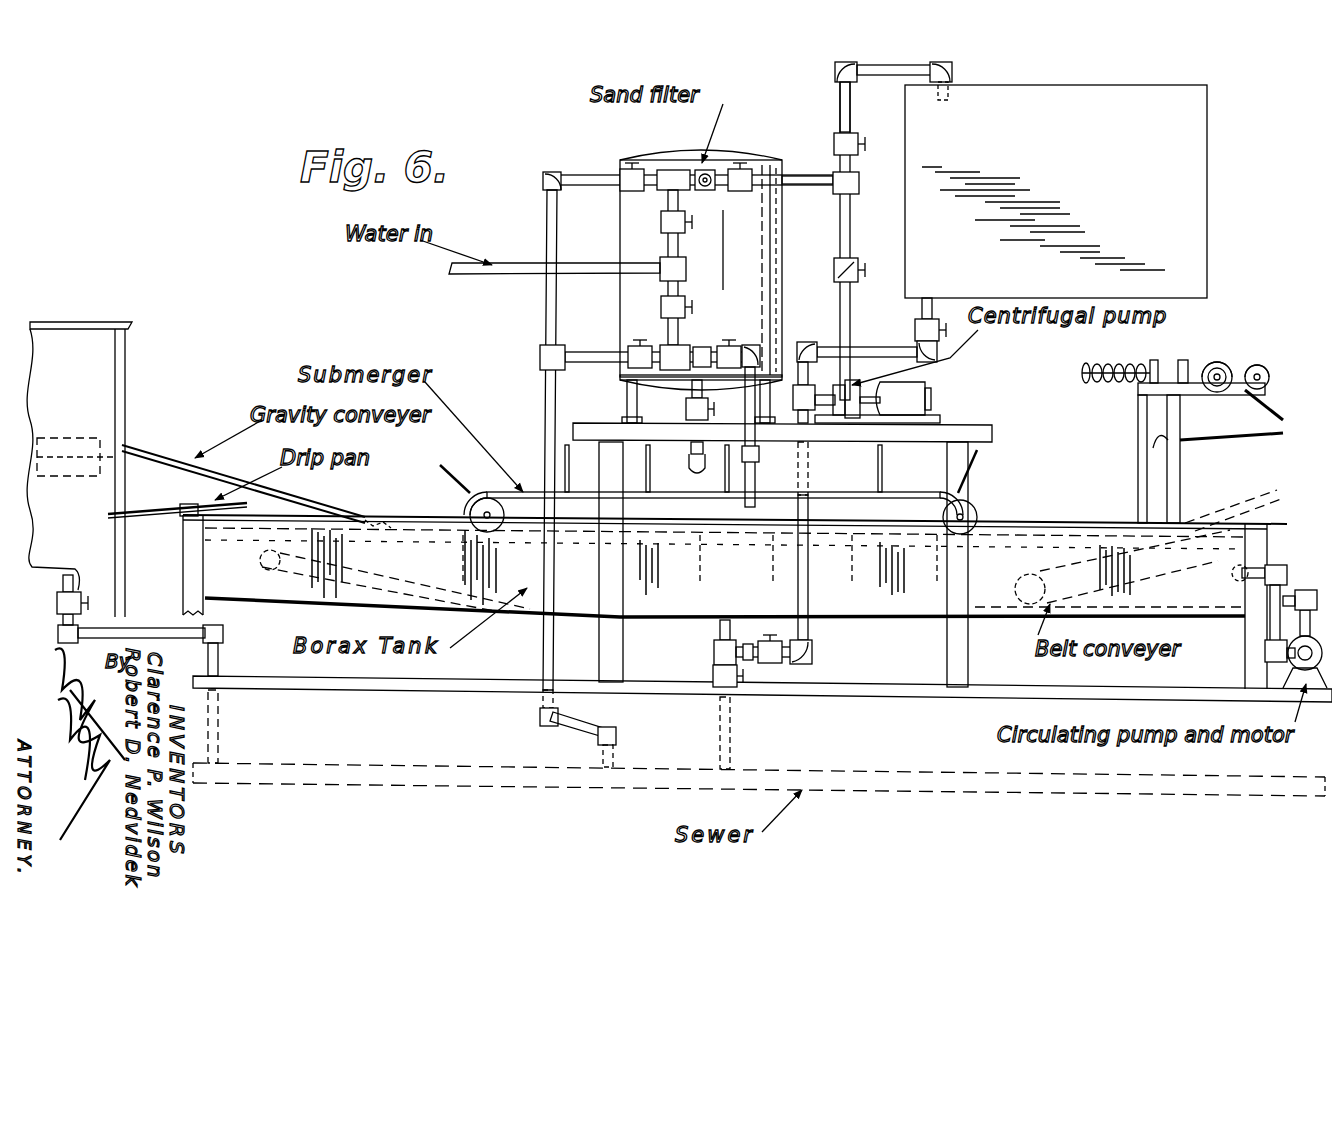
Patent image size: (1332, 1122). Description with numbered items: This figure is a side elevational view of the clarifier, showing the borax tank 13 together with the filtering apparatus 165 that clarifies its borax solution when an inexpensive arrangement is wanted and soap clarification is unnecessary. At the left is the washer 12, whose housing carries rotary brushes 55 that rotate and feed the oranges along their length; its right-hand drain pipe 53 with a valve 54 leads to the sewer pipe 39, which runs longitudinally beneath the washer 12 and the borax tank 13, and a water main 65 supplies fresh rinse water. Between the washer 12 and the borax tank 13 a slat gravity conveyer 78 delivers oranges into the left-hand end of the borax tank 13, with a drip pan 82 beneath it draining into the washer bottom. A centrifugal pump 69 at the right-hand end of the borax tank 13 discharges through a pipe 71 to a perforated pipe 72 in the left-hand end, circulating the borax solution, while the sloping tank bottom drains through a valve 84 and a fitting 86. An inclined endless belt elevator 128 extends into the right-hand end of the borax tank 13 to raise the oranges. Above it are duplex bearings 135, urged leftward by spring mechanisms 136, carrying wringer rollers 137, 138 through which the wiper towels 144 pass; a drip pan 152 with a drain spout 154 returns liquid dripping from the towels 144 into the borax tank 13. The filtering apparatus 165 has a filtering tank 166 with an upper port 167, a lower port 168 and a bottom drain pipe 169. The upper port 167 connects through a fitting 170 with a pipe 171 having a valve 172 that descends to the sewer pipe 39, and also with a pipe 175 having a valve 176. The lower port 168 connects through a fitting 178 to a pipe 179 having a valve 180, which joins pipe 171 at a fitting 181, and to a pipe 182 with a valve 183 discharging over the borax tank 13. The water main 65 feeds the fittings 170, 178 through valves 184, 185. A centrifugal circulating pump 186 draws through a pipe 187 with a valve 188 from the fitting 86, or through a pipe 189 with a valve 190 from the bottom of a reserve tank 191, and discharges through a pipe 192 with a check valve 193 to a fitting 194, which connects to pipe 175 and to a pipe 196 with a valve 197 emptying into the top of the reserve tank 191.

The washer 12 is at (95, 345).
The borax tank 13 is at (400, 518).
The sewer pipe 39 is at (560, 778).
The right-hand drain pipe 53 is at (72, 590).
The valve 54 is at (85, 603).
The rotary brushes 55 is at (100, 440).
The water main 65 is at (475, 272).
The centrifugal pump 69 is at (1303, 598).
The pipe 71 is at (407, 583).
The perforated pipe 72 is at (266, 568).
The gravity conveyer 78 is at (165, 455).
The drip pan 82 is at (148, 515).
The valve 84 is at (722, 678).
The fitting 86 is at (716, 650).
The inclined endless belt elevator 128 is at (1215, 505).
The duplex bearings 135 is at (1212, 362).
The spring mechanisms 136 is at (1115, 367).
The wringer roller 137 is at (1270, 372).
The wringer roller 138 is at (1228, 366).
The wiper towels 144 is at (1260, 366).
The drip pan 152 is at (1153, 446).
The drain spout 154 is at (1140, 475).
The filtering apparatus 165 is at (652, 254).
The filtering tank 166 is at (770, 278).
The upper port 167 is at (712, 176).
The lower port 168 is at (700, 355).
The drain pipe 169 is at (686, 409).
The fitting 170 is at (678, 172).
The pipe 171 is at (583, 175).
The valve 172 is at (632, 166).
The pipe 175 is at (805, 183).
The valve 176 is at (752, 177).
The fitting 178 is at (678, 347).
The pipe 179 is at (591, 364).
The valve 180 is at (640, 350).
The fitting 181 is at (540, 358).
The pipe 182 is at (745, 347).
The valve 183 is at (762, 338).
The valve 184 is at (660, 222).
The valve 185 is at (660, 306).
The centrifugal circulating pump 186 is at (858, 396).
The pipe 187 is at (808, 486).
The valve 188 is at (776, 662).
The pipe 189 is at (872, 350).
The valve 190 is at (918, 324).
The reserve tank 191 is at (1192, 225).
The pipe 192 is at (855, 284).
The check valve 193 is at (850, 260).
The fitting 194 is at (858, 183).
The pipe 196 is at (850, 120).
The valve 197 is at (862, 145).